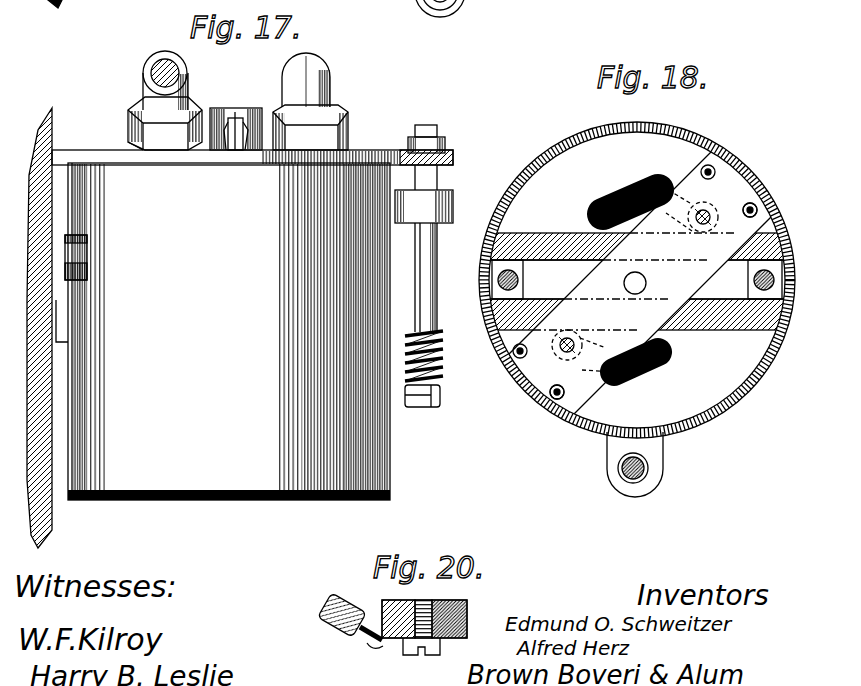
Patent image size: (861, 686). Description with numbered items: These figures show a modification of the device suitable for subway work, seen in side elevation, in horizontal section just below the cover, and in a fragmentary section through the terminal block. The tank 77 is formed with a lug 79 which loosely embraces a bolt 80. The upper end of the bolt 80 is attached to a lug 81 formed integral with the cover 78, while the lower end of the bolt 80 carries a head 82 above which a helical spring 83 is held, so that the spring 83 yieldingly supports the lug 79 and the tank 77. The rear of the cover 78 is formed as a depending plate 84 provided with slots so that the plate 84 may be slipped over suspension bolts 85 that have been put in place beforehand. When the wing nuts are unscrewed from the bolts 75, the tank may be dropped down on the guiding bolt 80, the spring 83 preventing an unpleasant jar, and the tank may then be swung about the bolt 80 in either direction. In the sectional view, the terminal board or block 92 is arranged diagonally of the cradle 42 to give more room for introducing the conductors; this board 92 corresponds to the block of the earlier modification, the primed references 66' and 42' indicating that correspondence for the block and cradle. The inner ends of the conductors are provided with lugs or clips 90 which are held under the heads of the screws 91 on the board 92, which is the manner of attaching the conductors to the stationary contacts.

In FIG. 17, the tank 77 is at (390, 467).
In FIG. 17, the cover 78 is at (368, 150).
In FIG. 17, the lug 79 is at (450, 198).
In FIG. 18, the lug 79 is at (652, 482).
In FIG. 17, the bolt 80 is at (427, 317).
In FIG. 18, the bolt 80 is at (647, 465).
In FIG. 17, the lug 81 is at (448, 153).
In FIG. 17, the head 82 is at (430, 402).
In FIG. 17, the helical spring 83 is at (440, 362).
In FIG. 17, the depending plate 84 is at (55, 318).
In FIG. 17, the suspension bolts 85 is at (85, 272).
In FIG. 18, the bolts 75 is at (503, 277).
In FIG. 18, the contact bar 66' is at (638, 268).
In FIG. 18, the screw 42' is at (777, 208).
In FIG. 18, the cradle 42 is at (538, 407).
In FIG. 20, the lugs or clips 90 is at (375, 645).
In FIG. 20, the screws 91 is at (440, 657).
In FIG. 20, the board or block 92 is at (458, 617).